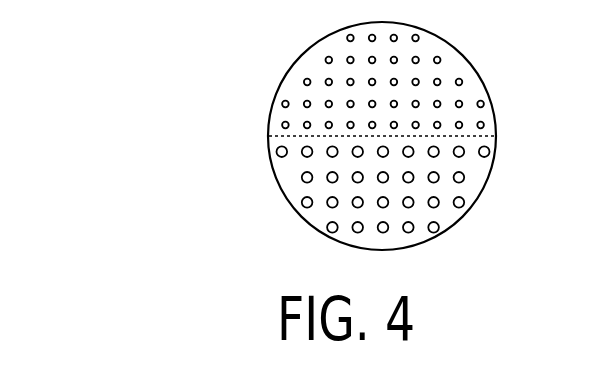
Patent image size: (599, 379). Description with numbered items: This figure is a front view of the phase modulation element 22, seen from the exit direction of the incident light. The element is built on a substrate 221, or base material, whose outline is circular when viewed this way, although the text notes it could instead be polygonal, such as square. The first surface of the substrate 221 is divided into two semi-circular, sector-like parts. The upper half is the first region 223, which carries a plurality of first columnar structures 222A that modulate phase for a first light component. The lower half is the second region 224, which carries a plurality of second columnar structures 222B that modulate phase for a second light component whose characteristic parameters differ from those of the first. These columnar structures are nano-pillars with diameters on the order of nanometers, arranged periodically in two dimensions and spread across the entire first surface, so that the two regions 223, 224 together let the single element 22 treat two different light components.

The phase modulation element 22 is at (345, 131).
The substrate 221 is at (478, 167).
The first columnar structures 222A is at (306, 79).
The second columnar structures 222B is at (304, 181).
The first region 223 is at (345, 82).
The second region 224 is at (348, 189).